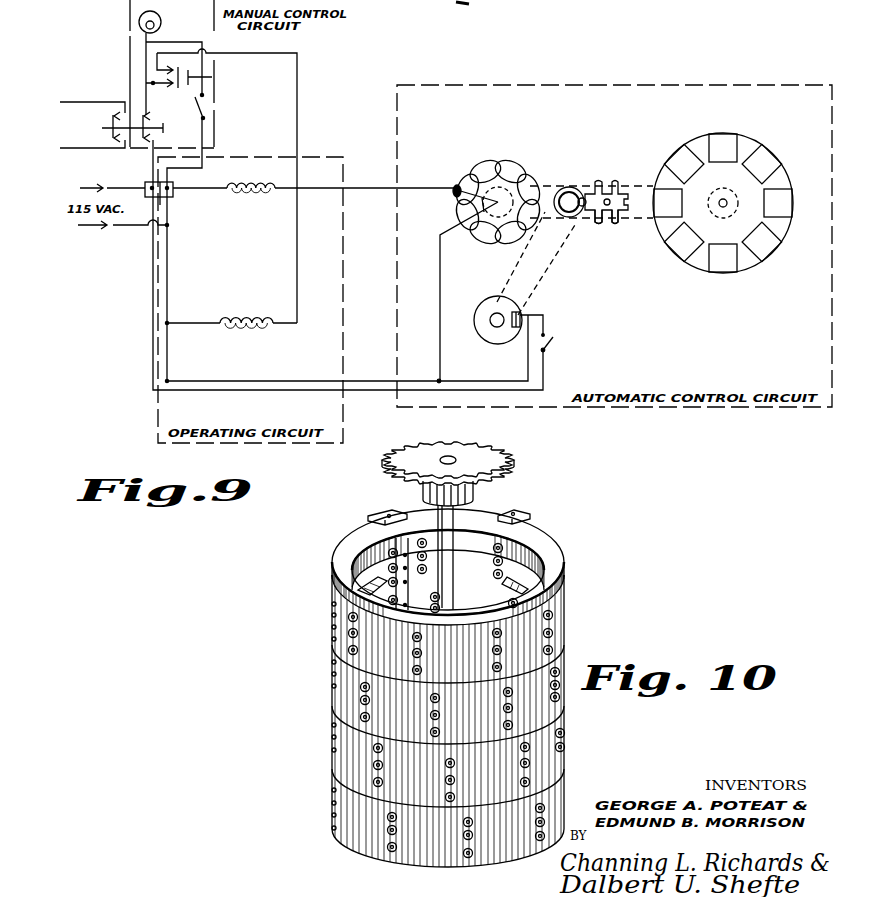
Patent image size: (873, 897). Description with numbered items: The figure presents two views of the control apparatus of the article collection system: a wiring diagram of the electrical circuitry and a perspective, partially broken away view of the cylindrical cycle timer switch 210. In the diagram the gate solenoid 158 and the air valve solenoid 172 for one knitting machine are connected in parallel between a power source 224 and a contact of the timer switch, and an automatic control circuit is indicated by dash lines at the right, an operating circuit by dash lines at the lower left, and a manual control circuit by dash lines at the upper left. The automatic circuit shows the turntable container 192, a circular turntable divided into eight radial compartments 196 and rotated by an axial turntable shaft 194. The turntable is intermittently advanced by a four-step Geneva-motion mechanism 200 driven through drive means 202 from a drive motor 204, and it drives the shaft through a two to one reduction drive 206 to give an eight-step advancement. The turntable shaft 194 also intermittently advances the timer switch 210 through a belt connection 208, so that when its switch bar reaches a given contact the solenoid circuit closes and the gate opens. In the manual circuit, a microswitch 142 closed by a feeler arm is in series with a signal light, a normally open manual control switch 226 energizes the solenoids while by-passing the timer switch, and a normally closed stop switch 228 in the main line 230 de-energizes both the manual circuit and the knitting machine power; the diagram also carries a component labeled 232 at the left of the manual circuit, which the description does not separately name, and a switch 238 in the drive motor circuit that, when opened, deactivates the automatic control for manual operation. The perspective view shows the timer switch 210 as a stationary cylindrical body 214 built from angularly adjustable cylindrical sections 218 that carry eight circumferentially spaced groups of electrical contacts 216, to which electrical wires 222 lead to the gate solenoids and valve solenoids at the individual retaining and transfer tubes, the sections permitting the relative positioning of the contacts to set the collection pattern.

In FIG. 9, the microswitch 142 is at (207, 108).
In FIG. 9, the gate solenoid 158 is at (250, 215).
In FIG. 9, the air valve solenoid 172 is at (242, 352).
In FIG. 9, the turntable container 192 is at (773, 128).
In FIG. 9, the turntable shaft 194 is at (743, 183).
In FIG. 9, the radial compartments 196 is at (800, 158).
In FIG. 9, the Geneva-motion mechanism 200 is at (590, 180).
In FIG. 9, the drive means 202 is at (548, 263).
In FIG. 9, the drive motor 204 is at (522, 308).
In FIG. 9, the two to one reduction drive 206 is at (635, 180).
In FIG. 9, the belt connection 208 is at (633, 223).
In FIG. 9, the cylindrical cycle timer switch 210 is at (518, 160).
In FIG. 10, the cylindrical cycle timer switch 210 is at (575, 575).
In FIG. 10, the cylindrical body 214 is at (567, 628).
In FIG. 10, the electrical contacts 216 is at (337, 747).
In FIG. 10, the angularly adjustable cylindrical sections 218 is at (328, 630).
In FIG. 9, the electrical wires 222 is at (430, 188).
In FIG. 9, the power source 224 is at (88, 226).
In FIG. 9, the manual control switch 226 is at (212, 77).
In FIG. 9, the stop switch 228 is at (177, 122).
In FIG. 9, the main line 230 is at (147, 158).
In FIG. 9, the relay 232 is at (113, 128).
In FIG. 9, the switch 238 is at (553, 345).